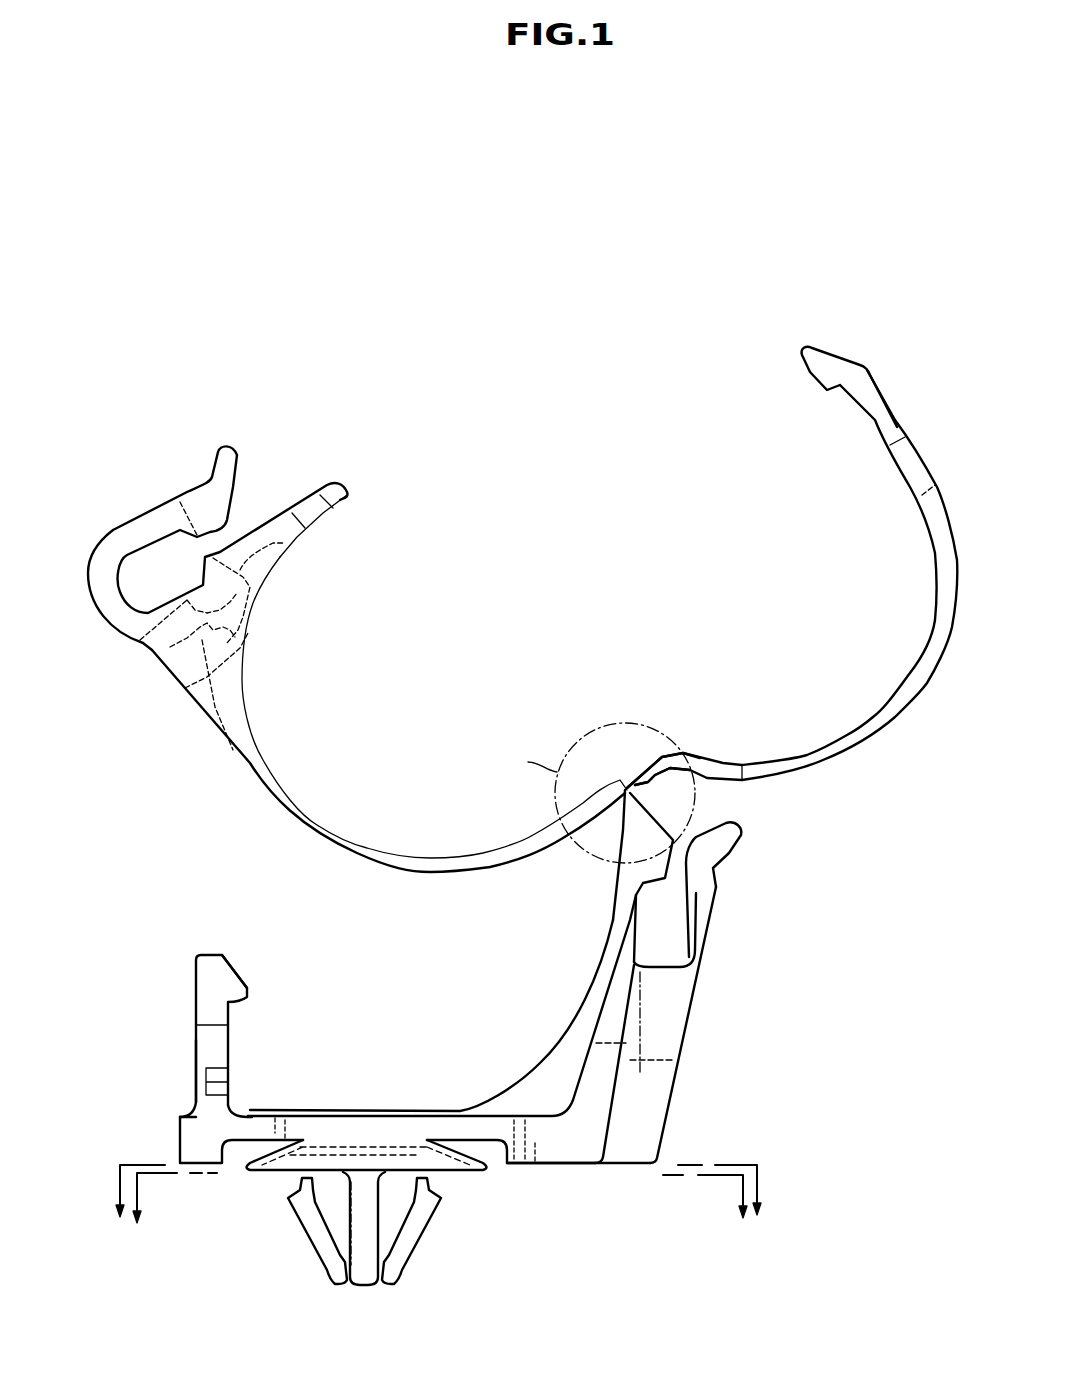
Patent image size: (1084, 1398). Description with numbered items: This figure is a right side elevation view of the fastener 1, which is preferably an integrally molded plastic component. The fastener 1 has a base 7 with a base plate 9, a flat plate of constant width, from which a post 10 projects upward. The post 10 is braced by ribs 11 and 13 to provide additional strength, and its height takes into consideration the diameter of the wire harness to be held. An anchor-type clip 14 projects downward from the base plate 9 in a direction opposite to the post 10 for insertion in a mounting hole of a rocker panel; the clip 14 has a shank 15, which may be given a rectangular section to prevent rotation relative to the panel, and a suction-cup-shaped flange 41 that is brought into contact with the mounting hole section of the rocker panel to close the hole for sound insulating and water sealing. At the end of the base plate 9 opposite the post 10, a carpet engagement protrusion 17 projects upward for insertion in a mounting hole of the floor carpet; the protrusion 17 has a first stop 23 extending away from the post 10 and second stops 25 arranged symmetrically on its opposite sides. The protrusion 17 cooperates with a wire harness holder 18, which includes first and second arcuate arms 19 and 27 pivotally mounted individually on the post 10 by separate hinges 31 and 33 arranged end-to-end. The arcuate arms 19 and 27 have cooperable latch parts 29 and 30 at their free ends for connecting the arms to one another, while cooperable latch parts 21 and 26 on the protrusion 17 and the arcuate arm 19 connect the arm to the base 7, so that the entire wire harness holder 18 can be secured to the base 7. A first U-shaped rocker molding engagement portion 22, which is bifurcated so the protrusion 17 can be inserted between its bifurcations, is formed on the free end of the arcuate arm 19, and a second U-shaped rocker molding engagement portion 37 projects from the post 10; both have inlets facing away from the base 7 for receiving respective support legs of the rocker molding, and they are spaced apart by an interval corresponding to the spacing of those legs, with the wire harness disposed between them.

The fastener 1 is at (328, 340).
The base 7 is at (511, 1190).
The base plate 9 is at (553, 1142).
The post 10 is at (632, 1040).
The rib 11 is at (557, 1052).
The rib 13 is at (668, 1100).
The anchor-type clip 14 is at (313, 1293).
The shank 15 is at (372, 1233).
The carpet engagement protrusion 17 is at (179, 984).
The wire harness holder 18 is at (530, 522).
The first arcuate arm 19 is at (272, 765).
The latch part 21 is at (243, 992).
The first U-shaped rocker molding engagement portion 22 is at (190, 472).
The first stop 23 is at (196, 1098).
The second stop 25 is at (205, 1078).
The latch part 26 is at (185, 688).
The second arcuate arm 27 is at (935, 593).
The latch part 29 is at (252, 603).
The latch part 30 is at (827, 390).
The hinge 31 is at (623, 785).
The hinge 33 is at (640, 785).
The second U-shaped rocker molding engagement portion 37 is at (745, 858).
The suction-cup-shaped flange 41 is at (273, 1173).